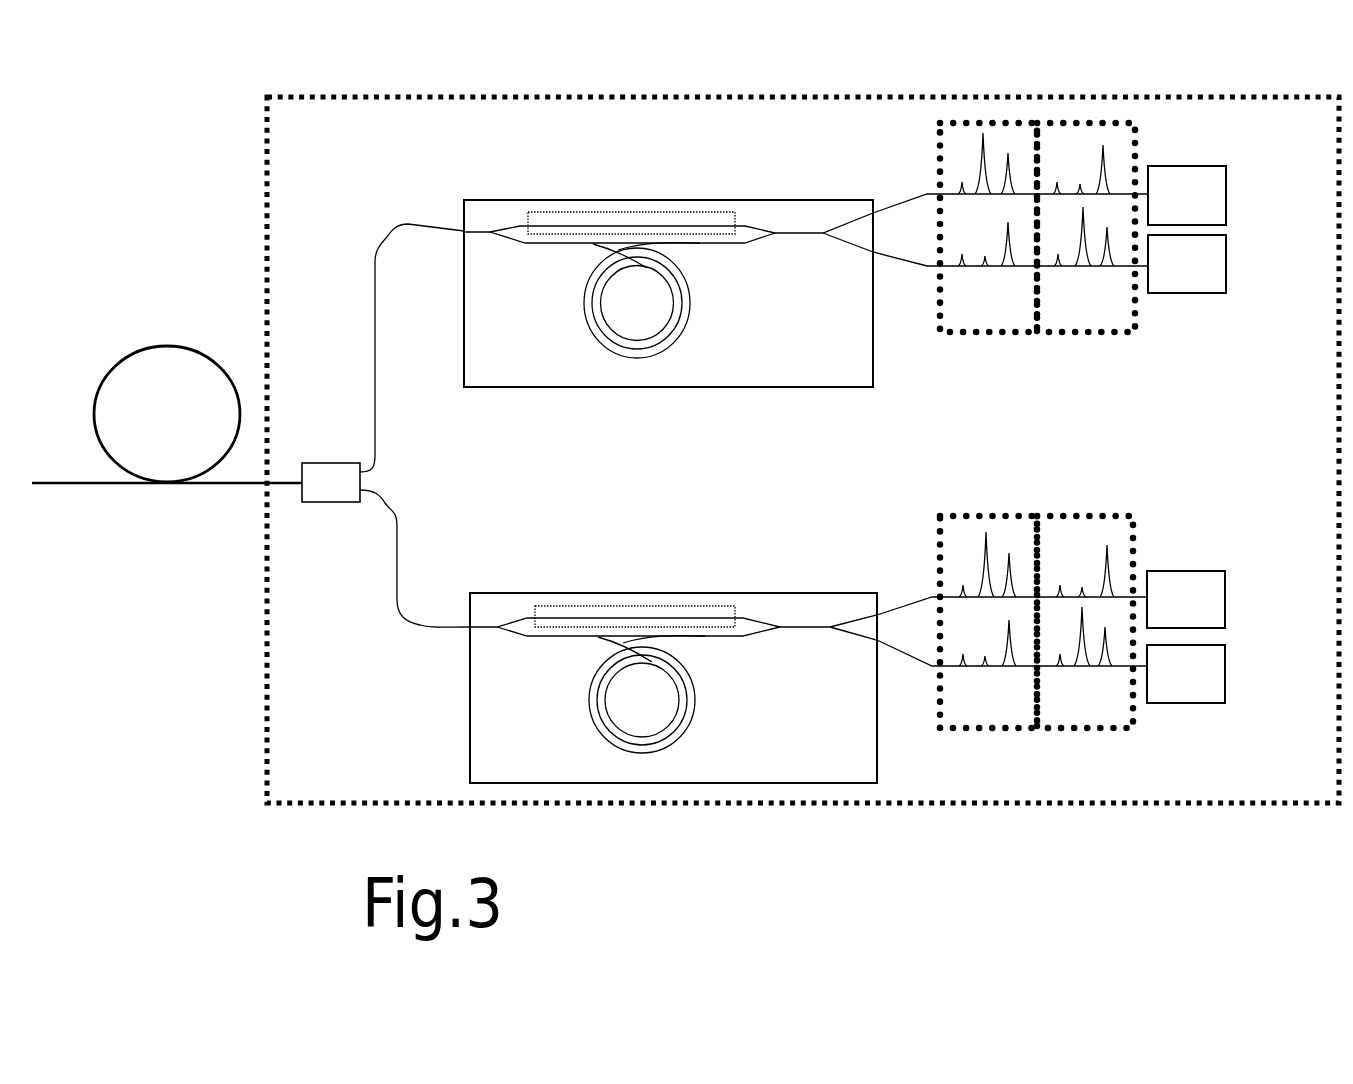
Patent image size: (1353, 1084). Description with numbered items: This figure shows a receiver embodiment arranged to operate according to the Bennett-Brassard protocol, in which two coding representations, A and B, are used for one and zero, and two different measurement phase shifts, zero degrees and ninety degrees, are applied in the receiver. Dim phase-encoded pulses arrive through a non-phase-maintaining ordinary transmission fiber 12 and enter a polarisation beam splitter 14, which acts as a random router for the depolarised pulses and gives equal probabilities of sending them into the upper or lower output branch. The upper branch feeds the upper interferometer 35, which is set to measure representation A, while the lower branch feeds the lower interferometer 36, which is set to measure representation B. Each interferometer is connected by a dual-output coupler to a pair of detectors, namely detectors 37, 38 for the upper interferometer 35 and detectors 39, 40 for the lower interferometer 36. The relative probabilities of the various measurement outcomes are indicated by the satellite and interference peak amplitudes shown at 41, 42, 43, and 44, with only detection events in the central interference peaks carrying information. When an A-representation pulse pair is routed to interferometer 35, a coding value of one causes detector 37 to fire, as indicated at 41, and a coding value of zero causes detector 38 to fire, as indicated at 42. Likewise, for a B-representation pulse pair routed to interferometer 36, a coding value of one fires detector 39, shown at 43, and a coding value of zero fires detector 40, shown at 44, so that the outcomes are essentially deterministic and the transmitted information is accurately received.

The transmission fiber 12 is at (173, 347).
The polarisation beam splitter 14 is at (330, 512).
The upper interferometer 35 is at (680, 387).
The lower interferometer 36 is at (727, 593).
The detector 37 is at (1225, 199).
The detector 38 is at (1225, 270).
The detector 39 is at (1222, 602).
The detector 40 is at (1222, 678).
The satellite and interference peak amplitudes 41 is at (988, 262).
The satellite and interference peak amplitudes 42 is at (1086, 262).
The satellite and interference peak amplitudes 43 is at (988, 654).
The satellite and interference peak amplitudes 44 is at (1085, 654).